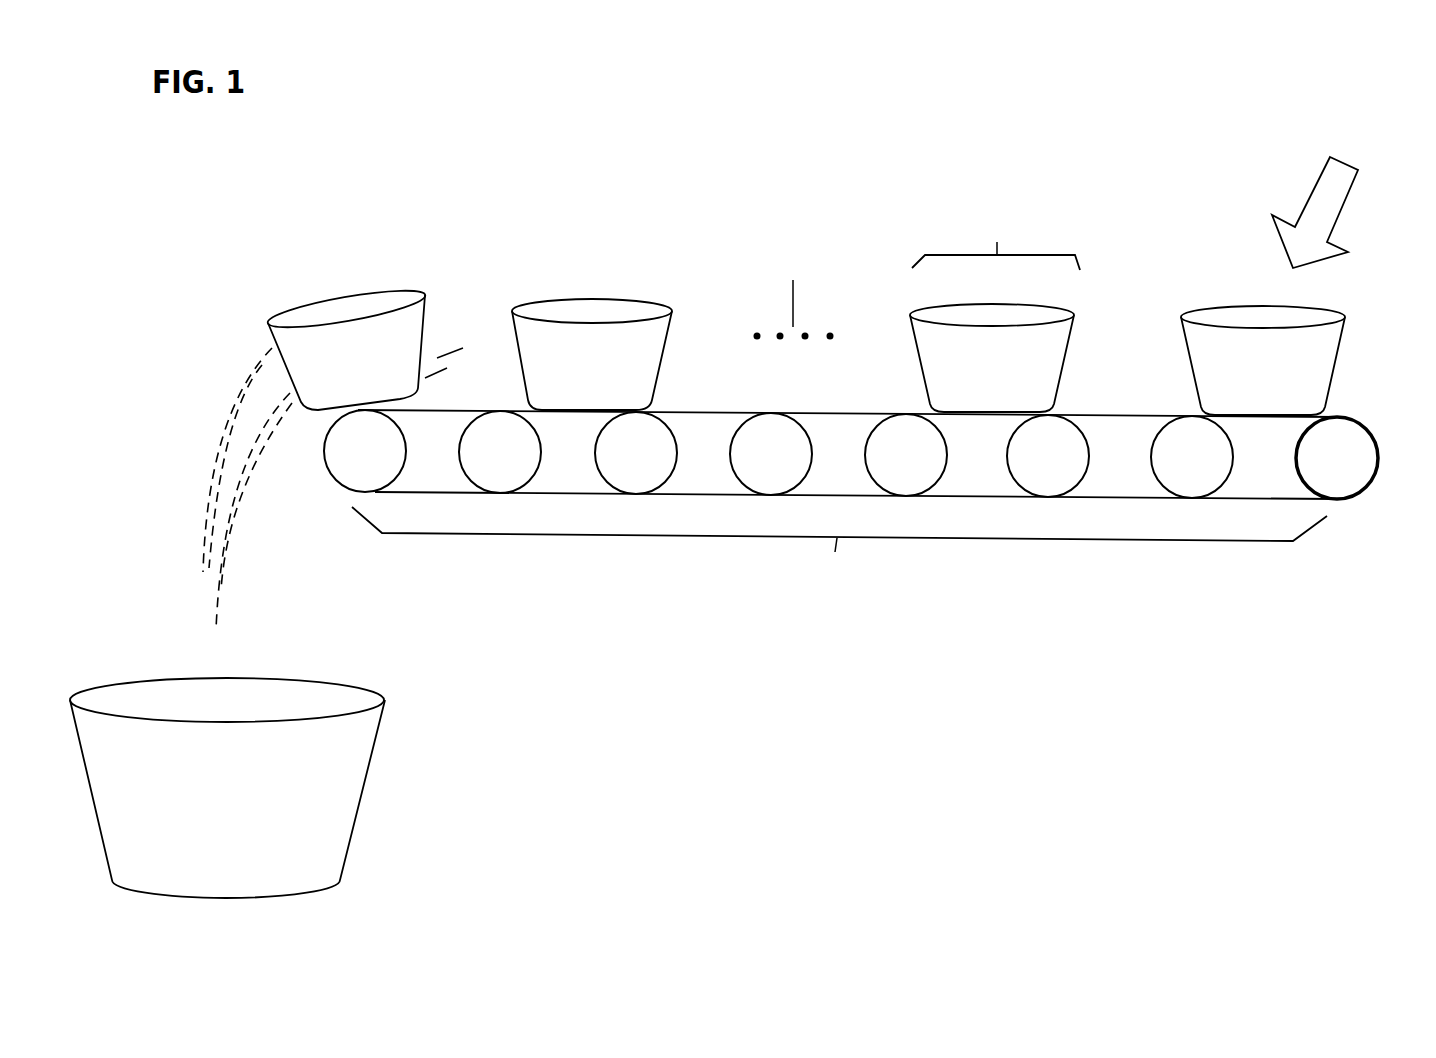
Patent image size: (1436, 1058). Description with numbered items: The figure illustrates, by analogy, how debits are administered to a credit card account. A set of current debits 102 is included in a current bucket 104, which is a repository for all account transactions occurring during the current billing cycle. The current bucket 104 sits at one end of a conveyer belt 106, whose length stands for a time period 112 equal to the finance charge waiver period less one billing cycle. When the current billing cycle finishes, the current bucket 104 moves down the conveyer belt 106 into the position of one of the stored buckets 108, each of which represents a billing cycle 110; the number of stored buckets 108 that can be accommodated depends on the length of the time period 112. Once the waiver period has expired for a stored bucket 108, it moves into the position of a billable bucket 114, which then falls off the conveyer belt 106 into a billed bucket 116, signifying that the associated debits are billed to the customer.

The current debits 102 is at (1290, 132).
The current bucket 104 is at (1323, 400).
The conveyer belt 106 is at (1345, 500).
The stored buckets 108 is at (912, 310).
The billing cycle 110 is at (1057, 180).
The time period 112 is at (860, 653).
The billable bucket 114 is at (395, 293).
The billed bucket 116 is at (372, 750).